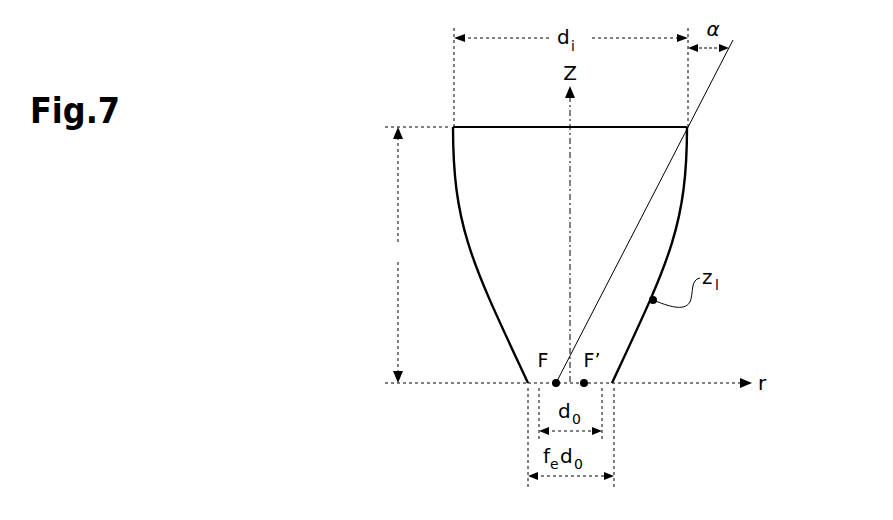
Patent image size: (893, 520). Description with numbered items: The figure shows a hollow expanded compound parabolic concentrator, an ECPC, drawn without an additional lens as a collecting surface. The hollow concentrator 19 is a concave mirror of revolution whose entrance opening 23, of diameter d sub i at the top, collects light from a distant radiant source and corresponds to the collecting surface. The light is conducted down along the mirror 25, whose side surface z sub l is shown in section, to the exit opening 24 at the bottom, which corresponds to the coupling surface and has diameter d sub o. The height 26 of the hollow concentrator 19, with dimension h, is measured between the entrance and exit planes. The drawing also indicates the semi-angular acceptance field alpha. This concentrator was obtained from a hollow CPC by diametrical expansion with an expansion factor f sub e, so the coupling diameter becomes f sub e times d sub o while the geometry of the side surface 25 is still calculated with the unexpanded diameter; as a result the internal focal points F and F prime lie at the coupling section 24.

The hollow concentrator 19 is at (613, 241).
The entrance opening 23 is at (521, 127).
The exit opening 24 is at (592, 386).
The mirror 25 is at (460, 200).
The height 26 is at (388, 252).